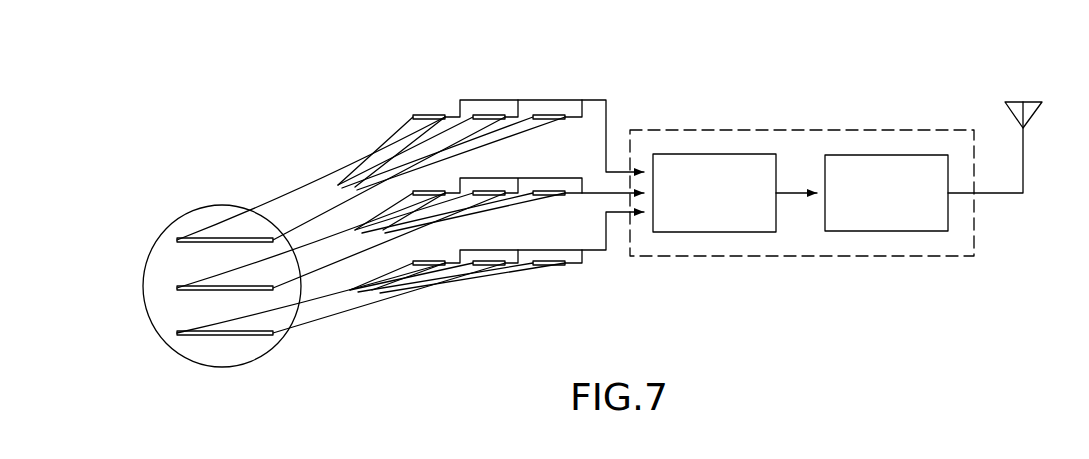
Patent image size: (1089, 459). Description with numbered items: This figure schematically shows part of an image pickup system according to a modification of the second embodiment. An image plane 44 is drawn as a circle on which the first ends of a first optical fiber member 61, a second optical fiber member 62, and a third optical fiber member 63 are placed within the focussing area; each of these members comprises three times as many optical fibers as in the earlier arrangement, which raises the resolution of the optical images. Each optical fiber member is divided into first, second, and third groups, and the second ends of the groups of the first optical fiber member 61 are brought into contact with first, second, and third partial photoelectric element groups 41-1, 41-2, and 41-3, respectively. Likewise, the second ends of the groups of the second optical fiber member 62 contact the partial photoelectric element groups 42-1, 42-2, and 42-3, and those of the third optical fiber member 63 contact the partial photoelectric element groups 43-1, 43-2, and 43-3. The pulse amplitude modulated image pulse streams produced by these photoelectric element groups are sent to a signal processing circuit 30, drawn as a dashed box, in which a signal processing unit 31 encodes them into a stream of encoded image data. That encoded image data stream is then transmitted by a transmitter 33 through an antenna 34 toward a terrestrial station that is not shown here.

The first partial photoelectric element group 41-1 is at (425, 115).
The second partial photoelectric element group 41-2 is at (492, 115).
The third partial photoelectric element group 41-3 is at (553, 115).
The first partial photoelectric element group 42-1 is at (430, 261).
The second partial photoelectric element group 42-2 is at (492, 261).
The third partial photoelectric element group 42-3 is at (555, 261).
The first partial photoelectric element group 43-1 is at (441, 186).
The second partial photoelectric element group 43-2 is at (493, 191).
The third partial photoelectric element group 43-3 is at (555, 191).
The image plane 44 is at (173, 222).
The first optical fiber member 61 is at (292, 203).
The second optical fiber member 62 is at (212, 323).
The third optical fiber member 63 is at (218, 272).
The signal processing circuit 30 is at (893, 256).
The signal processing unit 31 is at (720, 154).
The transmitter 33 is at (888, 155).
The antenna 34 is at (1030, 102).